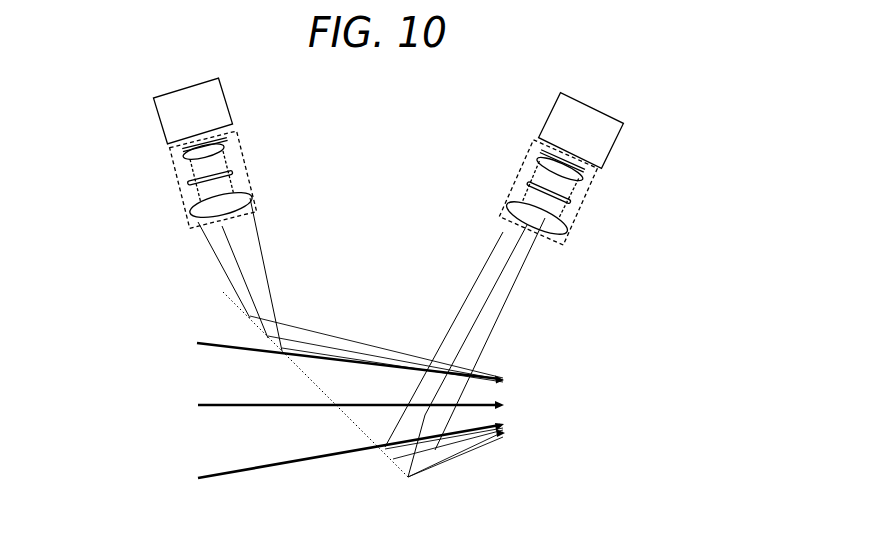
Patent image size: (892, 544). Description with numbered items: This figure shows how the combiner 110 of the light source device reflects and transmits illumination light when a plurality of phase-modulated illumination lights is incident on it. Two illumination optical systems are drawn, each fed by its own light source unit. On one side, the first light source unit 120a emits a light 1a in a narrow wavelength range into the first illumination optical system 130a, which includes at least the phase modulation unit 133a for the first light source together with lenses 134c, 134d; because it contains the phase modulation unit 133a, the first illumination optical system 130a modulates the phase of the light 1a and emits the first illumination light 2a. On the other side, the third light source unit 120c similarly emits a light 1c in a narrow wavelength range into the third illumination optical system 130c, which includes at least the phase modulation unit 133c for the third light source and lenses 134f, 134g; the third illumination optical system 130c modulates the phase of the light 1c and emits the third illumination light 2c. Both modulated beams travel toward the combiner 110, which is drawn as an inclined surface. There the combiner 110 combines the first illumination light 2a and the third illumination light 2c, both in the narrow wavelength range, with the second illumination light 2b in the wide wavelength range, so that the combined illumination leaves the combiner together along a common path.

The light in a narrow wavelength range 1a is at (540, 142).
The light in a narrow wavelength range 1c is at (183, 151).
The first illumination light 2a is at (508, 318).
The second illumination light 2b is at (303, 464).
The third illumination light 2c is at (270, 273).
The combiner 110 is at (347, 418).
The first light source unit 120a is at (608, 114).
The third light source unit 120c is at (162, 120).
The first illumination optical system 130a is at (591, 189).
The third illumination optical system 130c is at (246, 160).
The phase modulation unit for the first light source 133a is at (574, 203).
The phase modulation unit for the third light source 133c is at (190, 183).
The lens 134c is at (539, 162).
The lens 134d is at (507, 208).
The lens 134f is at (226, 148).
The lens 134g is at (255, 198).